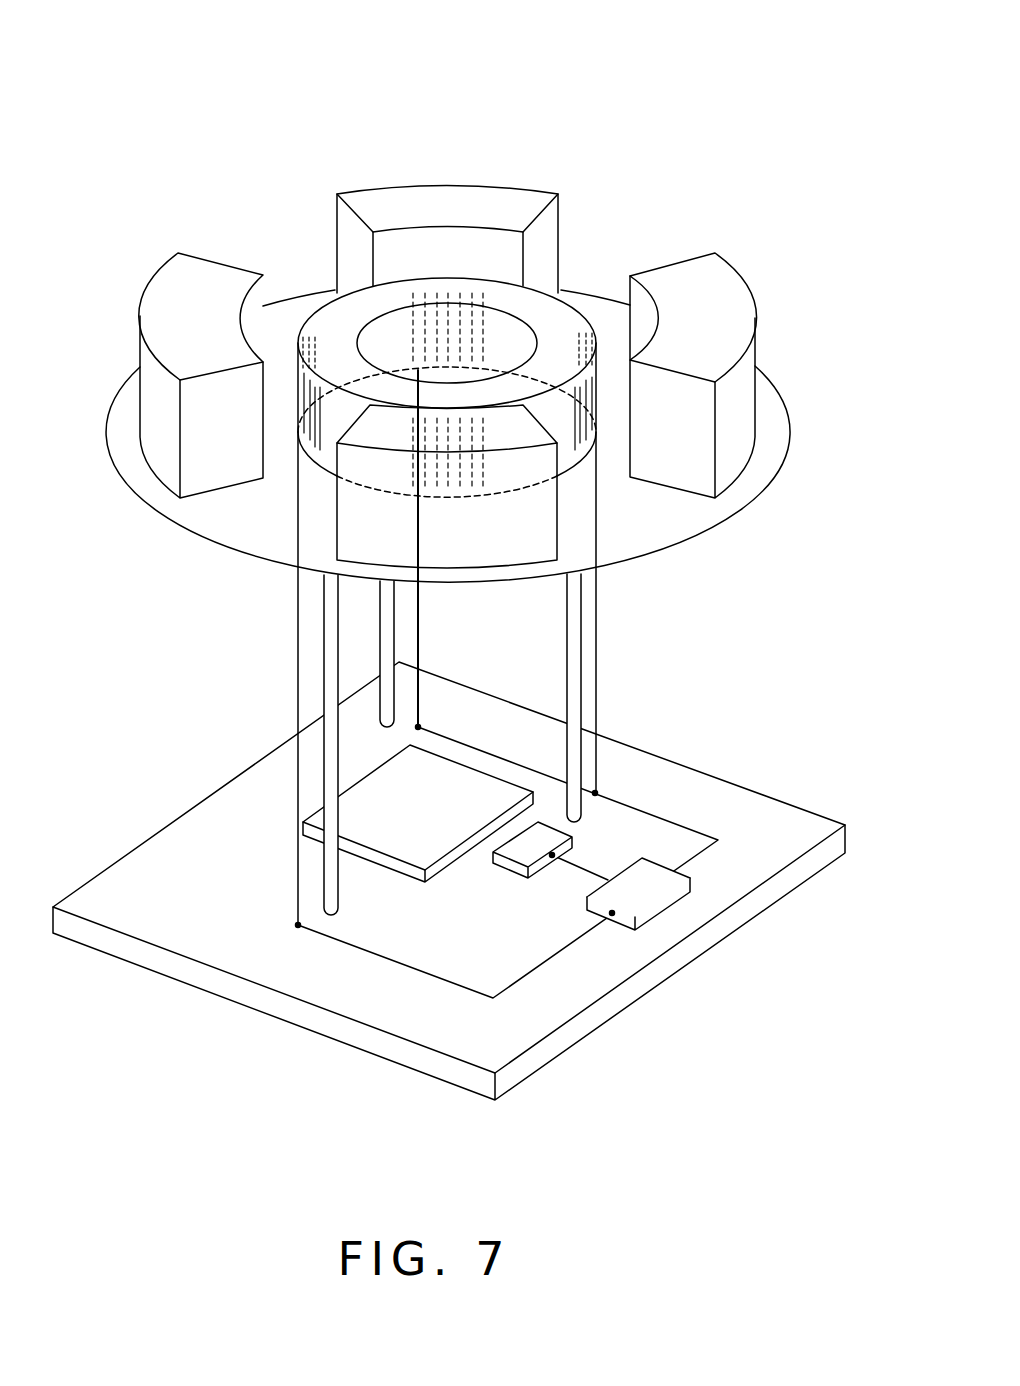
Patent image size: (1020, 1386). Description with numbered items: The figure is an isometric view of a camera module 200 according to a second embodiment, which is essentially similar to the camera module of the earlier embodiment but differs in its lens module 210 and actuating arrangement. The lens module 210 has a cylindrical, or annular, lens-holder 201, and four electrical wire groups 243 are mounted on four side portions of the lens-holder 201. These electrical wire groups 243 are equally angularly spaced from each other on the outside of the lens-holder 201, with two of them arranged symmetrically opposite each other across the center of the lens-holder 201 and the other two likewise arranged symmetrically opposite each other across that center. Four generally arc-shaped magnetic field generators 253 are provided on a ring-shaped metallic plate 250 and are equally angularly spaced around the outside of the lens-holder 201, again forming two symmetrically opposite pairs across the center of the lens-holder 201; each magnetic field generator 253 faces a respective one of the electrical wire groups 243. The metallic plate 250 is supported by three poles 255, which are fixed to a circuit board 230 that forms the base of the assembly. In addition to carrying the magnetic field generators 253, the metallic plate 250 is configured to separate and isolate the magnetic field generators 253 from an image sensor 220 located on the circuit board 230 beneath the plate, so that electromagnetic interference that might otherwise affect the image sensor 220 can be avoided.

The camera module 200 is at (444, 32).
The lens-holder 201 is at (553, 317).
The lens module 210 is at (567, 285).
The electrical wire groups 243 is at (452, 318).
The magnetic field generators 253 is at (478, 202).
The metallic plate 250 is at (685, 519).
The poles 255 is at (332, 693).
The circuit board 230 is at (212, 977).
The image sensor 220 is at (410, 840).